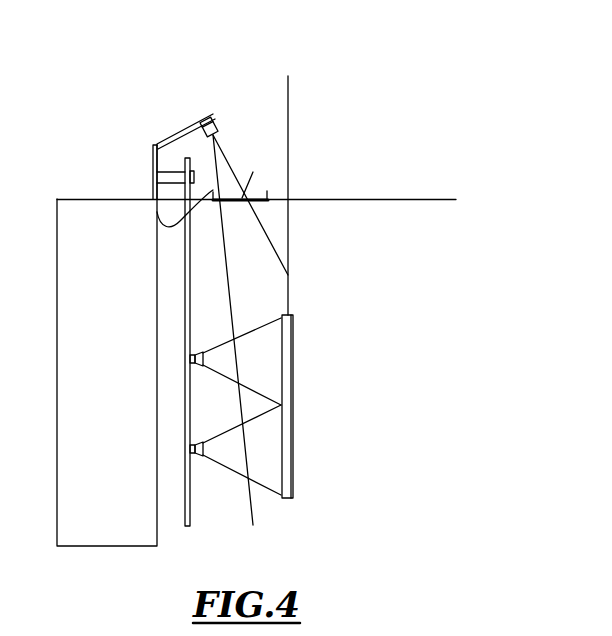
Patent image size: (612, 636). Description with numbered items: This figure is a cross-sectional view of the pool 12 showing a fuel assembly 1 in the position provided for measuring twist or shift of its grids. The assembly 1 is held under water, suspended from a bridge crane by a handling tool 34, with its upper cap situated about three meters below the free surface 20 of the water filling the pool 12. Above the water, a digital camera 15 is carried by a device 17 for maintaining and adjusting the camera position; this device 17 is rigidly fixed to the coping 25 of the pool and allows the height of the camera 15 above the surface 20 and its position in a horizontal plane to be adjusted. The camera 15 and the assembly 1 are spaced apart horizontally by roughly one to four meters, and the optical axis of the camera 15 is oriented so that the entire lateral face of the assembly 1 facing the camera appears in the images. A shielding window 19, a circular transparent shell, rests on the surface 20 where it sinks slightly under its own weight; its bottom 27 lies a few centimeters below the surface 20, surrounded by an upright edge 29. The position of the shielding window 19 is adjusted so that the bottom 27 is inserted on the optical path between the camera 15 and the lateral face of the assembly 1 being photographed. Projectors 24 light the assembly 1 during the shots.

The fuel assembly 1 is at (293, 357).
The pool 12 is at (447, 132).
The digital camera 15 is at (214, 117).
The device for maintaining and adjusting the position of the camera 17 is at (174, 141).
The shielding window 19 is at (282, 216).
The free surface of the water 20 is at (393, 199).
The projectors 24 is at (192, 447).
The coping of the pool 25 is at (153, 161).
The bottom of the shielding window 27 is at (253, 172).
The upright edge of the shielding window 29 is at (272, 195).
The handling tool 34 is at (289, 103).